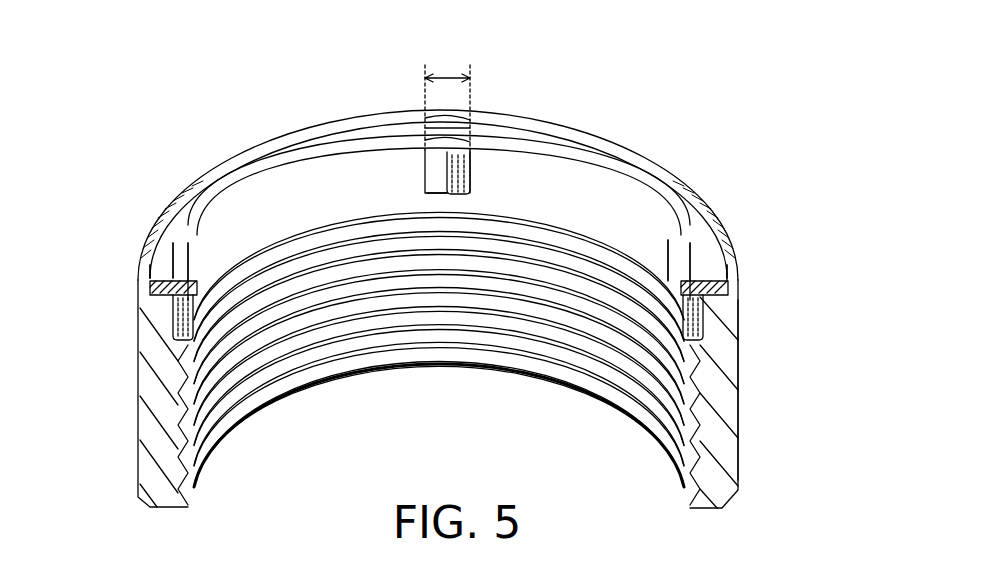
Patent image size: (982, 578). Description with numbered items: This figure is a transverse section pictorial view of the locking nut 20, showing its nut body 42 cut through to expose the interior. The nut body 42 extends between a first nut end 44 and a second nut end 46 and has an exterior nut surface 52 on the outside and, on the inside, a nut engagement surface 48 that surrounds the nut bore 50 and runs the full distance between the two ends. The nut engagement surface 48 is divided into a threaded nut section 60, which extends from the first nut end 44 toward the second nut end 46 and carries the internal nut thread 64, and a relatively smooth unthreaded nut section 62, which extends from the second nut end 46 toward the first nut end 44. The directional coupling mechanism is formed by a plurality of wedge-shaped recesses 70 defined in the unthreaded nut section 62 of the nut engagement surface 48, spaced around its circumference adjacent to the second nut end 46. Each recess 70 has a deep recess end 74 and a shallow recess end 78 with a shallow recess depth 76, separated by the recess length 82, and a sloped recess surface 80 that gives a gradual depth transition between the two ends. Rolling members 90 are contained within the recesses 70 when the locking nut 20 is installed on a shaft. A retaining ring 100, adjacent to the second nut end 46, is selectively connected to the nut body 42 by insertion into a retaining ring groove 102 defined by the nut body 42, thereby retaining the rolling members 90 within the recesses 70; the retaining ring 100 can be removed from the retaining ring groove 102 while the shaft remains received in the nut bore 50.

The locking nut 20 is at (561, 95).
The nut body 42 is at (135, 415).
The first nut end 44 is at (258, 412).
The second nut end 46 is at (238, 158).
The nut engagement surface 48 is at (690, 440).
The nut bore 50 is at (427, 436).
The exterior nut surface 52 is at (740, 420).
The threaded nut section 60 is at (295, 343).
The unthreaded nut section 62 is at (250, 229).
The internal nut thread 64 is at (622, 378).
The recesses 70 is at (432, 168).
The deep recess end 74 is at (467, 187).
The shallow recess depth 76 is at (428, 166).
The shallow recess end 78 is at (668, 255).
The recess surface 80 is at (443, 186).
The recess length 82 is at (445, 72).
The rolling members 90 is at (462, 177).
The retaining ring 100 is at (710, 260).
The retaining ring groove 102 is at (720, 292).